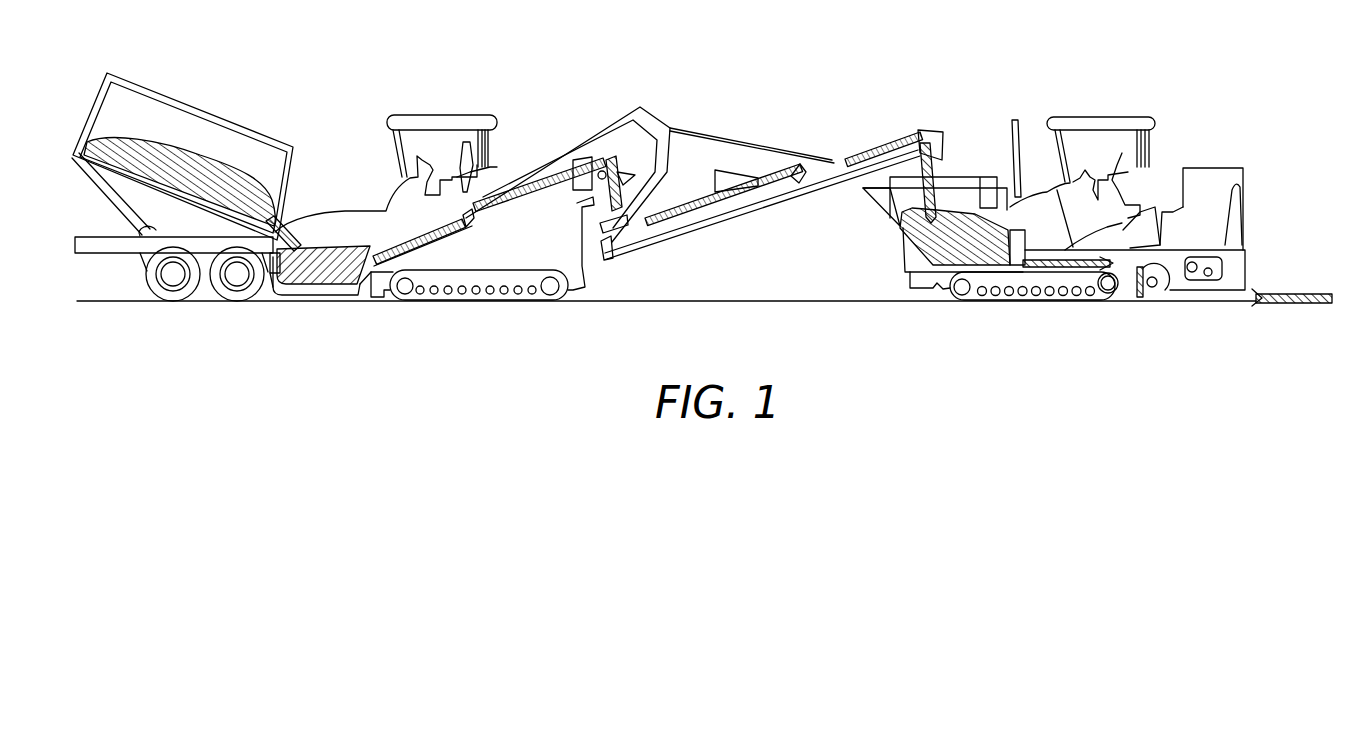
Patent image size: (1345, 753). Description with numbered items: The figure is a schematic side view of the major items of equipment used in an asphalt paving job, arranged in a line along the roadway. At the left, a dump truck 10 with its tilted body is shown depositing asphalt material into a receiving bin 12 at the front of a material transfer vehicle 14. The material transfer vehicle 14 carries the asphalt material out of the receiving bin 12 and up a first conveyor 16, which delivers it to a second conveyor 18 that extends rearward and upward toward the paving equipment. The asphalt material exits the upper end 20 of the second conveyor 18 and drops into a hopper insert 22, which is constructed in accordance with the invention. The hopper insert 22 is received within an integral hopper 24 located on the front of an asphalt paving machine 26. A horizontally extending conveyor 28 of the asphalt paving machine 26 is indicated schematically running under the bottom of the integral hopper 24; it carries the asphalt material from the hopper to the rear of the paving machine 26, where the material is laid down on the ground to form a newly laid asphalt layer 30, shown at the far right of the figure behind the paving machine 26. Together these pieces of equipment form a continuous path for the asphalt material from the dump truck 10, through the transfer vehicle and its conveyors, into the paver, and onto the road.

The dump truck 10 is at (127, 82).
The receiving bin 12 is at (323, 247).
The material transfer vehicle 14 is at (472, 120).
The first conveyor 16 is at (557, 163).
The second conveyor 18 is at (833, 160).
The upper end 20 is at (940, 134).
The hopper insert 22 is at (980, 177).
The integral hopper 24 is at (933, 267).
The asphalt paving machine 26 is at (1137, 120).
The horizontally extending conveyor 28 is at (1023, 263).
The newly laid asphalt layer 30 is at (1272, 297).